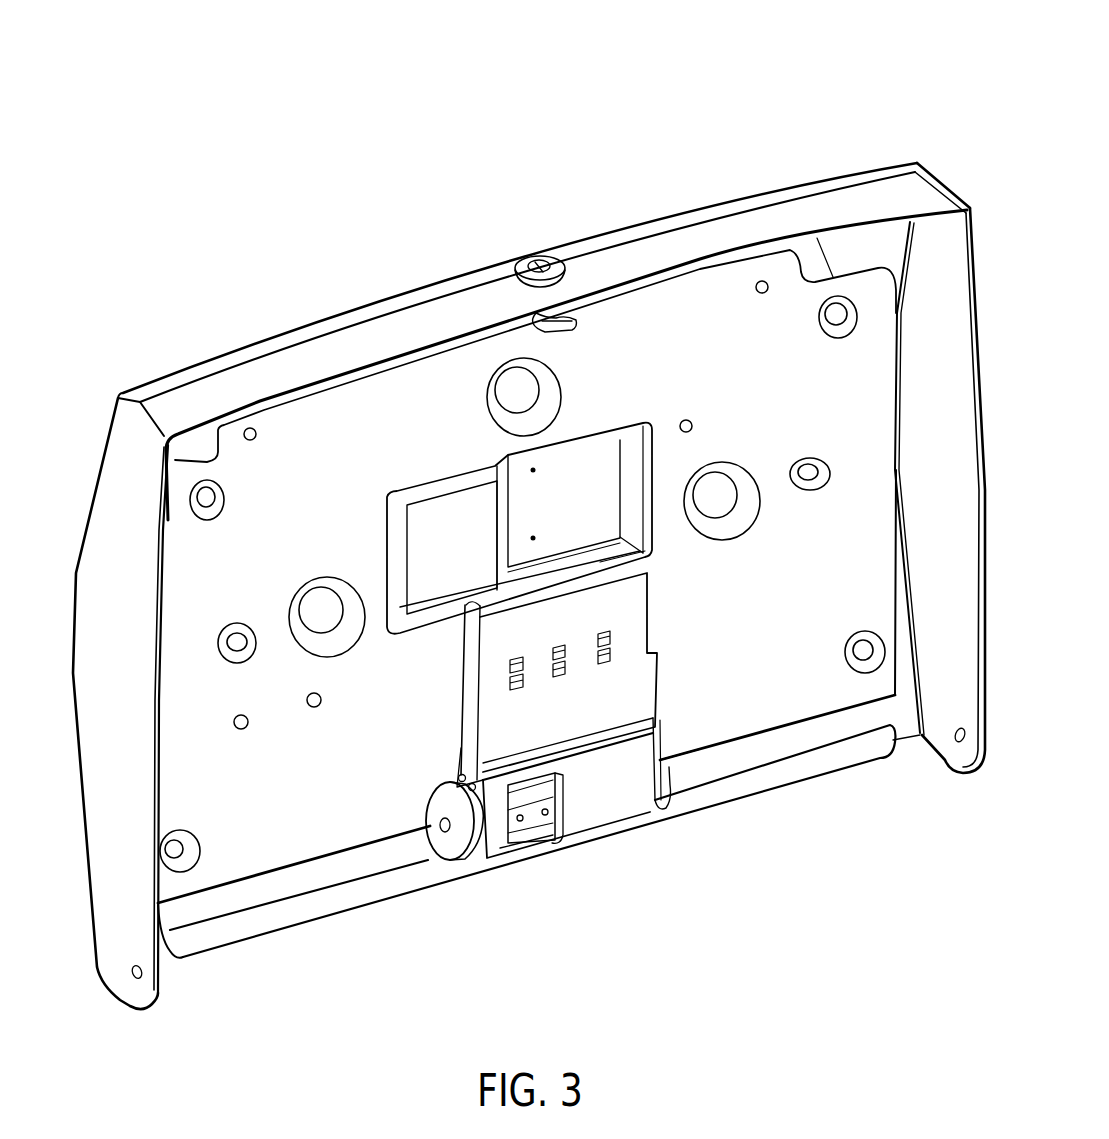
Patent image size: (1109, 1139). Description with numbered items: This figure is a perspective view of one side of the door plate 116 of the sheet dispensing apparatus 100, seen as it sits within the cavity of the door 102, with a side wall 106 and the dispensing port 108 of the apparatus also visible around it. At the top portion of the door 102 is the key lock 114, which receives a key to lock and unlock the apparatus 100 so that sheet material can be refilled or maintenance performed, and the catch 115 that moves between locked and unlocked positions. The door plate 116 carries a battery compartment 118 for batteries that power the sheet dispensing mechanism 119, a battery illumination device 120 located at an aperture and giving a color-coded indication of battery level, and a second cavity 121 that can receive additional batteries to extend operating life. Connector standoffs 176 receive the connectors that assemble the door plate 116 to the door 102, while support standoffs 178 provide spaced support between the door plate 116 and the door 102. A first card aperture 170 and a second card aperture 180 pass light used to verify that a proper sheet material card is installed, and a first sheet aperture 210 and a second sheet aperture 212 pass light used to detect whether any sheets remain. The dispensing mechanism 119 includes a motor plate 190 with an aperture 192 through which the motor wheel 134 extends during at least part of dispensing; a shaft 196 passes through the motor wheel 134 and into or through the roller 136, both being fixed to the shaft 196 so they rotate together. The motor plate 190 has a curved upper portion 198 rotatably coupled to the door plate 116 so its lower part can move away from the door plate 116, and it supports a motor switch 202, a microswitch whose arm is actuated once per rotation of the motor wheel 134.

The dispensing apparatus 100 is at (820, 70).
The door 102 is at (290, 363).
The side wall 106 is at (108, 520).
The dispensing port 108 is at (206, 965).
The key lock 114 is at (540, 258).
The catch 115 is at (566, 316).
The door plate 116 is at (178, 519).
The battery compartment 118 is at (592, 455).
The sheet dispensing mechanism 119 is at (684, 703).
The battery illumination device 120 is at (683, 420).
The second cavity 121 is at (425, 527).
The motor wheel 134 is at (528, 836).
The roller 136 is at (468, 845).
The first card aperture 170 is at (764, 280).
The connector standoffs 176 is at (233, 640).
The support standoffs 178 is at (318, 600).
The second card aperture 180 is at (248, 441).
The motor plate 190 is at (623, 688).
The aperture 192 is at (580, 811).
The shaft 196 is at (445, 830).
The curved upper portion 198 is at (622, 567).
The motor switch 202 is at (462, 763).
The first sheet aperture 210 is at (311, 709).
The second sheet aperture 212 is at (240, 730).